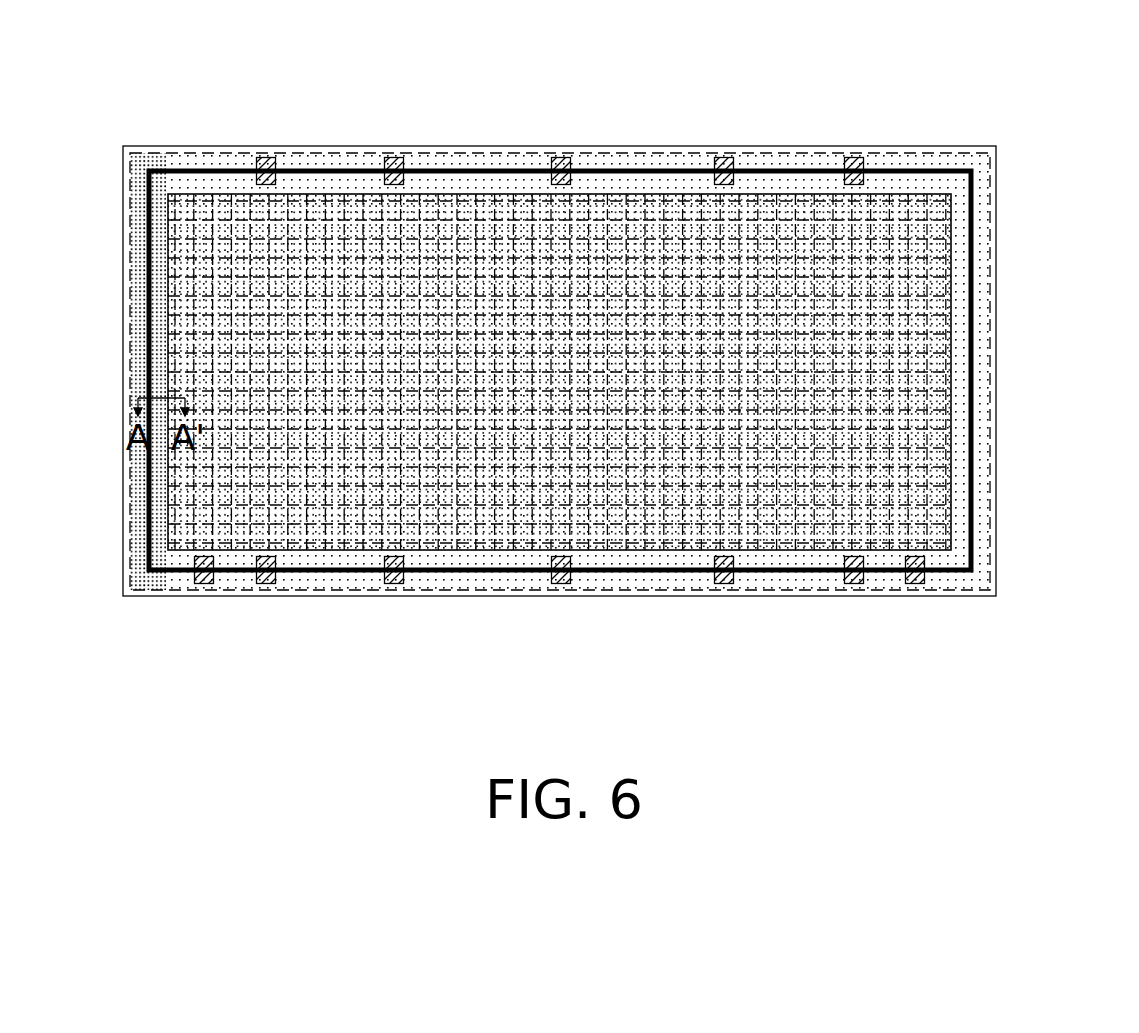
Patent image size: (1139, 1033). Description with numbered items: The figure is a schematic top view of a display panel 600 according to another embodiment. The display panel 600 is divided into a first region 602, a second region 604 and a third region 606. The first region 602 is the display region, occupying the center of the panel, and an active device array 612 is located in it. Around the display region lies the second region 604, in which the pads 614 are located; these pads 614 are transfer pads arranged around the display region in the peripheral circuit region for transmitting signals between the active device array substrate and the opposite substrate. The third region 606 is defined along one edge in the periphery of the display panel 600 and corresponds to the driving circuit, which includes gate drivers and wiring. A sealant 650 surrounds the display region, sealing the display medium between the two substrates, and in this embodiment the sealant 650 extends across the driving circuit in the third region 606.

The display panel 600 is at (1130, 669).
The first region 602 is at (927, 468).
The second region 604 is at (942, 152).
The third region 606 is at (151, 153).
The active device array 612 is at (931, 337).
The pads 614 is at (852, 150).
The sealant 650 is at (786, 160).